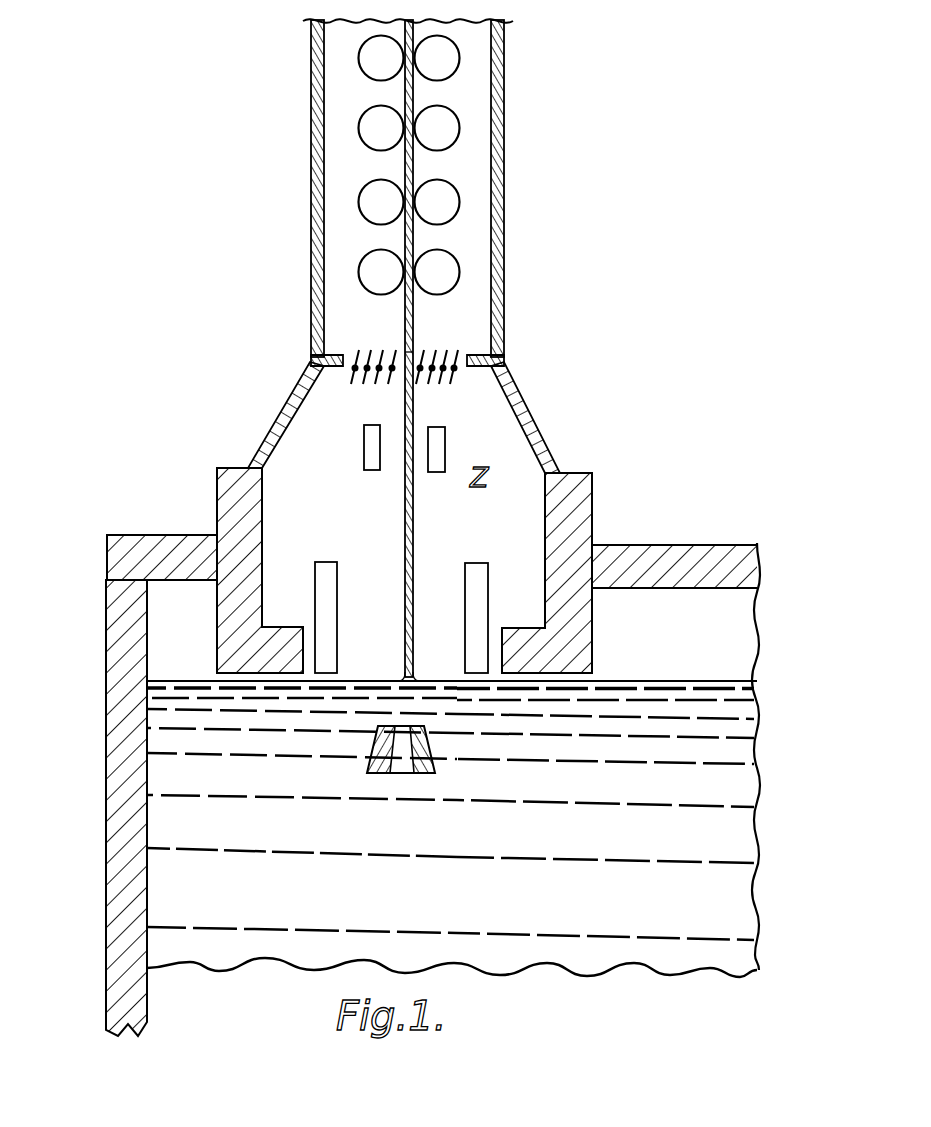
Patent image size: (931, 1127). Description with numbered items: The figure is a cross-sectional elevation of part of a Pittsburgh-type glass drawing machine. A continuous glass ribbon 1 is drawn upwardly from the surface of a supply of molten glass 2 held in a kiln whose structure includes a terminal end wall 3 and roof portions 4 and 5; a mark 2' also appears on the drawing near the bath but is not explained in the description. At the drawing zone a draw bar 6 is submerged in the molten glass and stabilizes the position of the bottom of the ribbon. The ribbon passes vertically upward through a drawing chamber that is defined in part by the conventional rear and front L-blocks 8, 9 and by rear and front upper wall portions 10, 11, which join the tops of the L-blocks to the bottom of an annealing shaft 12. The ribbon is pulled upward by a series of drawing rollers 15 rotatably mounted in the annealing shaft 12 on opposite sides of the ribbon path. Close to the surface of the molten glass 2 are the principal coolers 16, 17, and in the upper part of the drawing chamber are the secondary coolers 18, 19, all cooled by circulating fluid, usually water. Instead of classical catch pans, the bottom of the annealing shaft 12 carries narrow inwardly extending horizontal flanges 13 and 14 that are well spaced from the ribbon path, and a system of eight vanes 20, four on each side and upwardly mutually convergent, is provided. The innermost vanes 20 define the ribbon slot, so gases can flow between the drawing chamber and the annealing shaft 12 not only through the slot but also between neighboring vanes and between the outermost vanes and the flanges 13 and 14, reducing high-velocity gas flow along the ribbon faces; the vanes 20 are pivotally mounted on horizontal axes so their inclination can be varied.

The glass ribbon 1 is at (405, 528).
The molten glass 2 is at (453, 760).
The melt surface at partition 2' is at (489, 318).
The terminal end wall 3 is at (128, 745).
The roof portion 4 is at (167, 552).
The roof portion 5 is at (675, 568).
The draw bar 6 is at (378, 774).
The rear L-block 8 is at (242, 502).
The front L-block 9 is at (567, 498).
The rear upper wall portion 10 is at (277, 418).
The front upper wall portion 11 is at (540, 427).
The annealing shaft 12 is at (515, 210).
The horizontal flange 13 is at (315, 350).
The horizontal flange 14 is at (483, 352).
The drawing rollers 15 is at (373, 127).
The principal cooler 16 is at (330, 580).
The principal cooler 17 is at (473, 580).
The secondary cooler 18 is at (372, 438).
The secondary cooler 19 is at (433, 440).
The vanes 20 is at (443, 380).